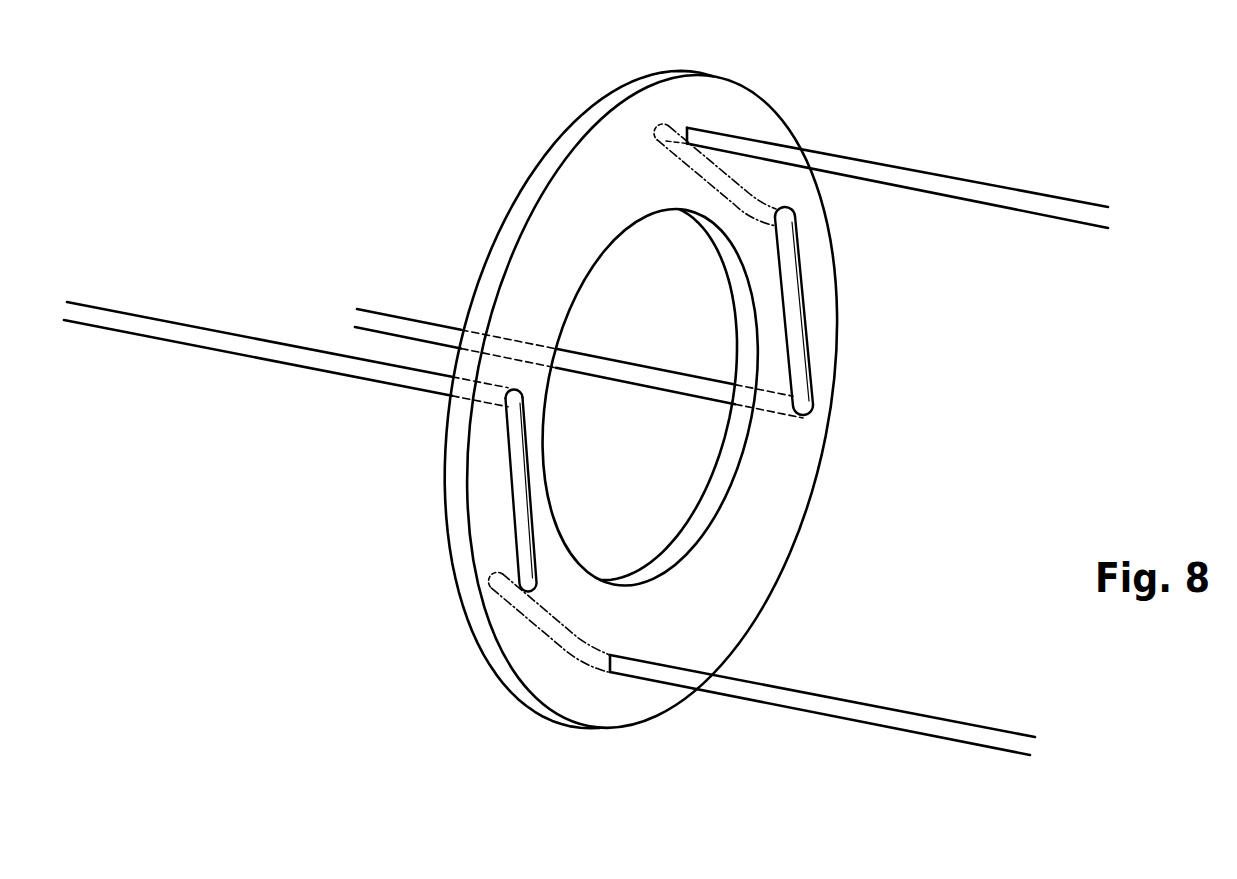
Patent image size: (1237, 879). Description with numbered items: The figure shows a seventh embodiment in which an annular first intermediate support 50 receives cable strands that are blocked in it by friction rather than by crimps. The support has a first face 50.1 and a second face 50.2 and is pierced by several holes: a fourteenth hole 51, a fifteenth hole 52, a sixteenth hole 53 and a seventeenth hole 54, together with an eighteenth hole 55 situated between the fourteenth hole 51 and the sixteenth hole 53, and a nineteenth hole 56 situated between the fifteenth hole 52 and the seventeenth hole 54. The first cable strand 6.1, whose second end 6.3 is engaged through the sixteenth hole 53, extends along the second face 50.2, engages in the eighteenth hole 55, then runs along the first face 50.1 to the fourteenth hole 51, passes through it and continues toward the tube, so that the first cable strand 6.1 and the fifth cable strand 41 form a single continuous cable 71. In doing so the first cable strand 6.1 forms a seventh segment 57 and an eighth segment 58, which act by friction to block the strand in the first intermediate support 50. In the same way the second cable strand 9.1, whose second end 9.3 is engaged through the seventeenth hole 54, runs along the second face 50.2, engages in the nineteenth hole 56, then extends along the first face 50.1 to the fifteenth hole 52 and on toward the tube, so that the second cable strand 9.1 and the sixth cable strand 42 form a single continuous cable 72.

The first intermediate support 50 is at (634, 395).
The first face 50.1 is at (772, 543).
The second face 50.2 is at (541, 158).
The fourteenth hole 51 is at (795, 420).
The fifteenth hole 52 is at (497, 400).
The sixteenth hole 53 is at (677, 125).
The seventeenth hole 54 is at (607, 670).
The eighteenth hole 55 is at (797, 228).
The nineteenth hole 56 is at (489, 490).
The seventh segment 57 is at (686, 119).
The eighth segment 58 is at (835, 348).
The fifth cable strand 41 is at (400, 323).
The sixth cable strand 42 is at (160, 332).
The single continuous cable 71 is at (887, 165).
The first cable strand 6.1 is at (1063, 212).
The second end of the first cable strand 6.3 is at (712, 138).
The single continuous cable 72 is at (822, 737).
The second cable strand 9.1 is at (930, 727).
The second end of the second cable strand 9.3 is at (667, 677).